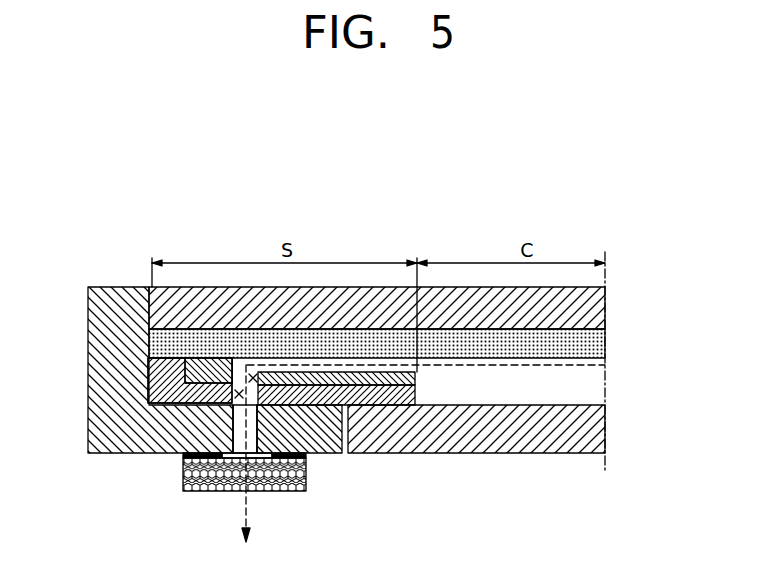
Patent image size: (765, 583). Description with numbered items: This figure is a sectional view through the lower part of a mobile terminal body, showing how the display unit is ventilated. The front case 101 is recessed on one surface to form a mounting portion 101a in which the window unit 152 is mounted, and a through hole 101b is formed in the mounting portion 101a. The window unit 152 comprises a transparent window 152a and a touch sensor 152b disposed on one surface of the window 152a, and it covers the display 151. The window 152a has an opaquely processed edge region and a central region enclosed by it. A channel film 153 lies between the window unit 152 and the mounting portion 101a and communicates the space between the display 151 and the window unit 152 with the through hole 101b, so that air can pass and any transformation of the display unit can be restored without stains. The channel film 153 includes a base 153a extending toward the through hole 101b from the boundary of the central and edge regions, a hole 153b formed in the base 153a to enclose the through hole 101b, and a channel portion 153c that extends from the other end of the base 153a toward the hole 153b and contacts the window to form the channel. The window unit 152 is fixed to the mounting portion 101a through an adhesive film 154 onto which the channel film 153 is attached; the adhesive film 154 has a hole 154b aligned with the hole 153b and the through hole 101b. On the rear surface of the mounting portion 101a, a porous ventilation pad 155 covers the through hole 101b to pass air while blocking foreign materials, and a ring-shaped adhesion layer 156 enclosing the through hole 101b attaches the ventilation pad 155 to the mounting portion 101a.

The front case 101 is at (100, 355).
The mounting portion 101a is at (163, 403).
The through hole 101b is at (250, 430).
The display 151 is at (600, 437).
The window unit 152 is at (443, 324).
The window 152a is at (600, 312).
The touch sensor 152b is at (600, 349).
The channel film 153 is at (281, 289).
The base 153a is at (200, 365).
The hole 153b is at (253, 378).
The channel portion 153c is at (327, 380).
The adhesive film 154 is at (397, 400).
The hole 154b is at (238, 394).
The ventilation pad 155 is at (281, 492).
The adhesion layer 156 is at (197, 491).